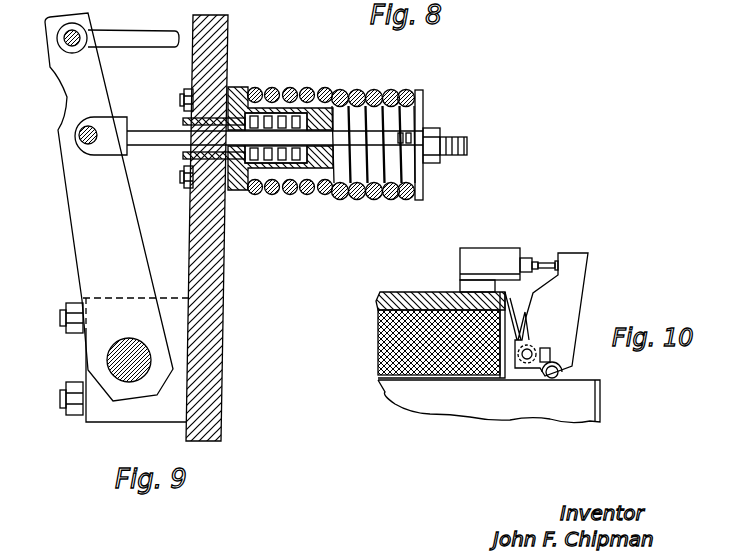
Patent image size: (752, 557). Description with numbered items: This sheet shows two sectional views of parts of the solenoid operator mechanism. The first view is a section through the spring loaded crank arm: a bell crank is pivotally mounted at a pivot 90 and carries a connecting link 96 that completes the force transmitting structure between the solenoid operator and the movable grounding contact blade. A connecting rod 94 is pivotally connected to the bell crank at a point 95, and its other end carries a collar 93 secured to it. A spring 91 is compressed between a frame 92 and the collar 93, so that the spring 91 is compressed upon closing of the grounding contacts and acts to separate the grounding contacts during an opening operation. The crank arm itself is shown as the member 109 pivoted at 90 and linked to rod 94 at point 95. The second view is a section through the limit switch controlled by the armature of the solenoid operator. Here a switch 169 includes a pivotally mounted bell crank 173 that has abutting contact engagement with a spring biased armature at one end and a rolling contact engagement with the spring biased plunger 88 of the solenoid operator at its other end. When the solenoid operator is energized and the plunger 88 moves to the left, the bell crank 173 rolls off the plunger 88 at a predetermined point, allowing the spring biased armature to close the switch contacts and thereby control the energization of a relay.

In FIG. 10, the spring biased plunger 88 is at (437, 408).
In FIG. 9, the pivot 90 is at (108, 360).
In FIG. 9, the spring 91 is at (338, 95).
In FIG. 9, the frame 92 is at (223, 275).
In FIG. 9, the collar 93 is at (423, 100).
In FIG. 9, the connecting rod 94 is at (162, 140).
In FIG. 9, the pivot point 95 is at (78, 138).
In FIG. 9, the connecting link 96 is at (148, 35).
In FIG. 9, the lever 109 is at (80, 258).
In FIG. 10, the switch 169 is at (535, 240).
In FIG. 10, the bell crank 173 is at (576, 300).